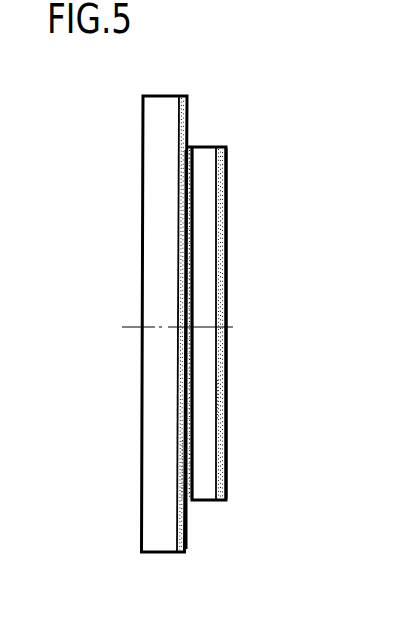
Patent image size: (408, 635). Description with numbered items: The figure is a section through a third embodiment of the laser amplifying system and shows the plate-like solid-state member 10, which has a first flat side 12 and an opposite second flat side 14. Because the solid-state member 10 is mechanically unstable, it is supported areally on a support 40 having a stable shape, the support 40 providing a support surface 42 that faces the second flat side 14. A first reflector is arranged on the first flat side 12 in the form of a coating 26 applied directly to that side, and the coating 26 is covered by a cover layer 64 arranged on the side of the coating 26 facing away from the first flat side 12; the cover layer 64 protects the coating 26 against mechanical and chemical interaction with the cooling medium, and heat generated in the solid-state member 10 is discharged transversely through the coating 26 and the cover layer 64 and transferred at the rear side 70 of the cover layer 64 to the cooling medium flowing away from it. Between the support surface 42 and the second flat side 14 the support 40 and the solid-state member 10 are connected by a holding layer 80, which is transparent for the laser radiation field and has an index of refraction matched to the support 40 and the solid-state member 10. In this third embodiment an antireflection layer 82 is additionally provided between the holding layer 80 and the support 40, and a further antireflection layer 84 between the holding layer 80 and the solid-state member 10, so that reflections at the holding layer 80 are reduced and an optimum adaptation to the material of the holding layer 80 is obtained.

The solid-state member 10 is at (194, 318).
The first flat side 12 is at (253, 296).
The second flat side 14 is at (187, 363).
The coating 26 is at (215, 227).
The support 40 is at (194, 351).
The support surface 42 is at (178, 473).
The cover layer 64 is at (215, 403).
The rear side 70 is at (226, 432).
The holding layer 80 is at (190, 203).
The antireflection layer 82 is at (185, 195).
The antireflection layer 84 is at (193, 173).